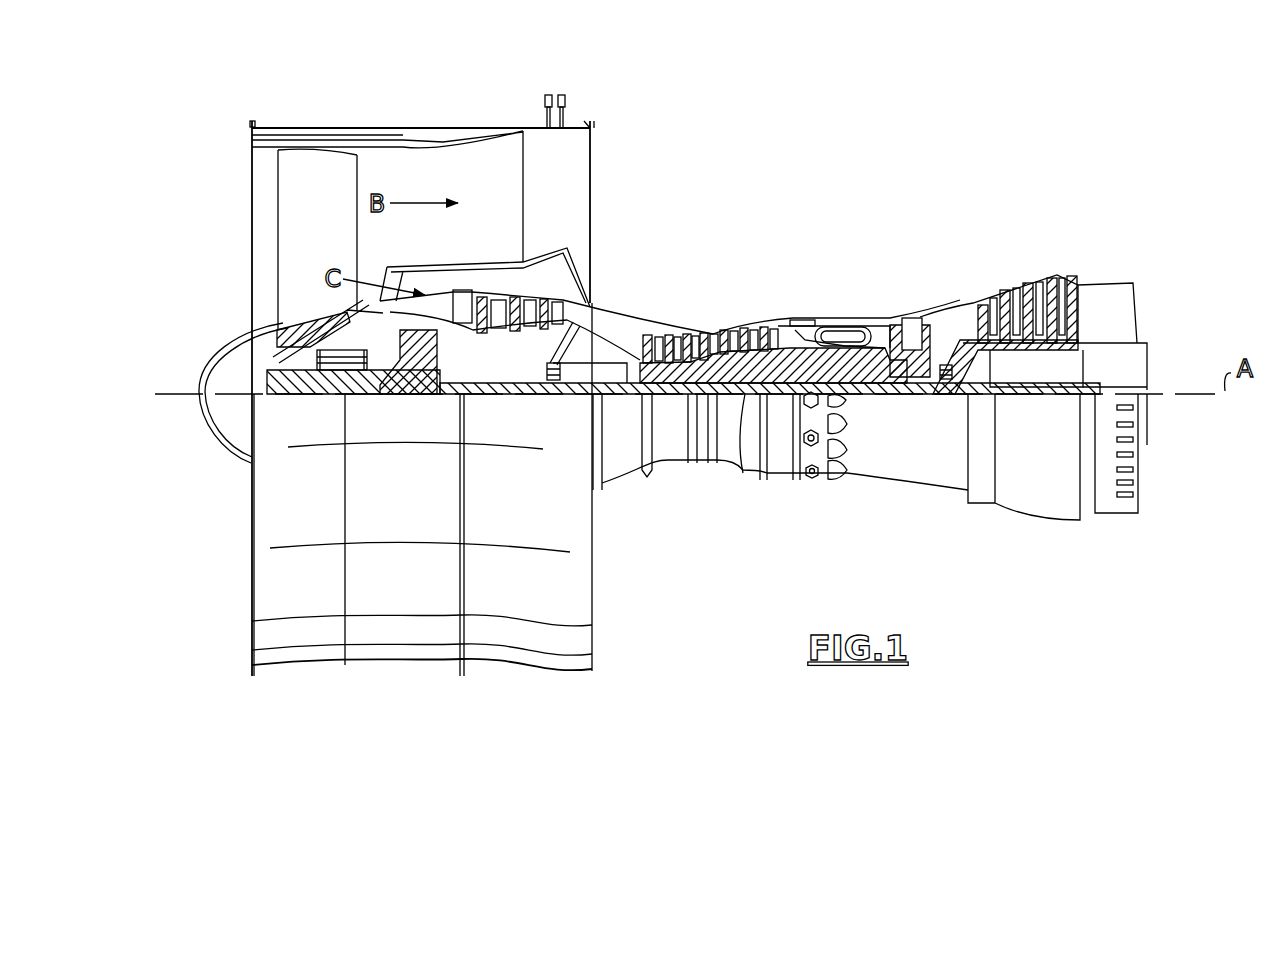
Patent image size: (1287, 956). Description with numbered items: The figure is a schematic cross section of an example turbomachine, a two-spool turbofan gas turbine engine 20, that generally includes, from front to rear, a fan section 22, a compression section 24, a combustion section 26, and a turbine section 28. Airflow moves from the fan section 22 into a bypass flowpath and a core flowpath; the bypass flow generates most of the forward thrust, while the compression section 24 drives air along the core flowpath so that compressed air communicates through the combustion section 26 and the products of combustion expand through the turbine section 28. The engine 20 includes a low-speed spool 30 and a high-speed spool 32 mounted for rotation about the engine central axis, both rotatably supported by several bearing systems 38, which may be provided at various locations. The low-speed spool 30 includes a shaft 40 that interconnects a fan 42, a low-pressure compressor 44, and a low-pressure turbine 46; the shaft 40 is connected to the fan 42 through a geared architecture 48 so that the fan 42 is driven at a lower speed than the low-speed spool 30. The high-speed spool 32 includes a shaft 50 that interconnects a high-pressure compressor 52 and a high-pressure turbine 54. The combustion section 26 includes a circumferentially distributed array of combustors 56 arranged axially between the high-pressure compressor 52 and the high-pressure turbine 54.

The gas turbine engine 20 is at (864, 168).
The fan section 22 is at (355, 120).
The compression section 24 is at (648, 300).
The combustion section 26 is at (849, 292).
The turbine section 28 is at (993, 256).
The low-speed spool 30 is at (743, 473).
The high-speed spool 32 is at (783, 340).
The bearing systems 38 is at (360, 372).
The shaft 40 is at (620, 394).
The fan 42 is at (319, 306).
The low-pressure compressor 44 is at (600, 333).
The low-pressure turbine 46 is at (1018, 323).
The geared architecture 48 is at (428, 392).
The shaft 50 is at (857, 395).
The high-pressure compressor 52 is at (712, 325).
The high-pressure turbine 54 is at (910, 317).
The combustors 56 is at (850, 337).